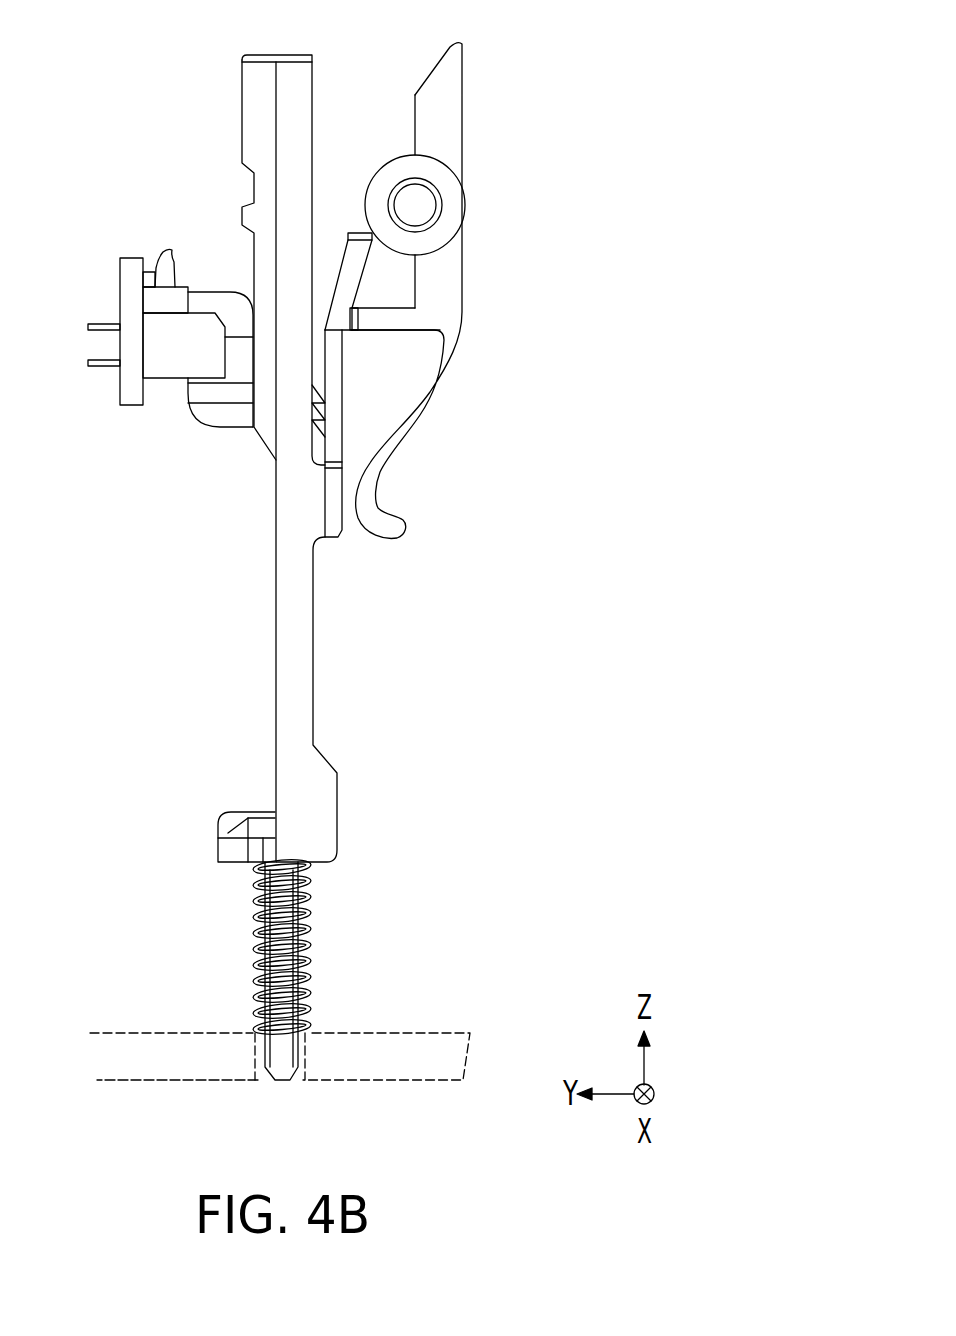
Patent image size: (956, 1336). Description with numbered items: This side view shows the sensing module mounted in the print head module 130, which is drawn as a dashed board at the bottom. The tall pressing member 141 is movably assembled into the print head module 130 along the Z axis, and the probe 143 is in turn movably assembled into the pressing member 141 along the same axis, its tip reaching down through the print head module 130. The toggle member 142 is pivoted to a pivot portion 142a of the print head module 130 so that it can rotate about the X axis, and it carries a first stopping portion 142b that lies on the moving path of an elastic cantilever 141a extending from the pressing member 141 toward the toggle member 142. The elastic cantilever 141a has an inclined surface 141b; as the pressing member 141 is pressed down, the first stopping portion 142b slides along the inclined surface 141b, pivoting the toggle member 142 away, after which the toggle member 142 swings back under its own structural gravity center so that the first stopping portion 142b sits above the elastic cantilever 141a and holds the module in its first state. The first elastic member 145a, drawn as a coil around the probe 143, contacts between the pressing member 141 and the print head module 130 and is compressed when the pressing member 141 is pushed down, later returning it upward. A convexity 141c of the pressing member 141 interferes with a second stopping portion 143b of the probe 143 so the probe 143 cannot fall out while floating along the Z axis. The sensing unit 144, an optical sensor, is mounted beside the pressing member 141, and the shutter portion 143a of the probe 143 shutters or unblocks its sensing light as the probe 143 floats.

The print head module 130 is at (418, 1035).
The pressing member 141 is at (258, 114).
The elastic cantilever 141a is at (345, 295).
The inclined surface 141b is at (362, 268).
The convexity 141c is at (228, 848).
The toggle member 142 is at (400, 428).
The pivot portion 142a is at (460, 203).
The first stopping portion 142b is at (393, 333).
The probe 143 is at (283, 1073).
The shutter portion 143a is at (238, 370).
The second stopping portion 143b is at (263, 823).
The sensing unit 144 is at (173, 370).
The first elastic member 145a is at (303, 940).